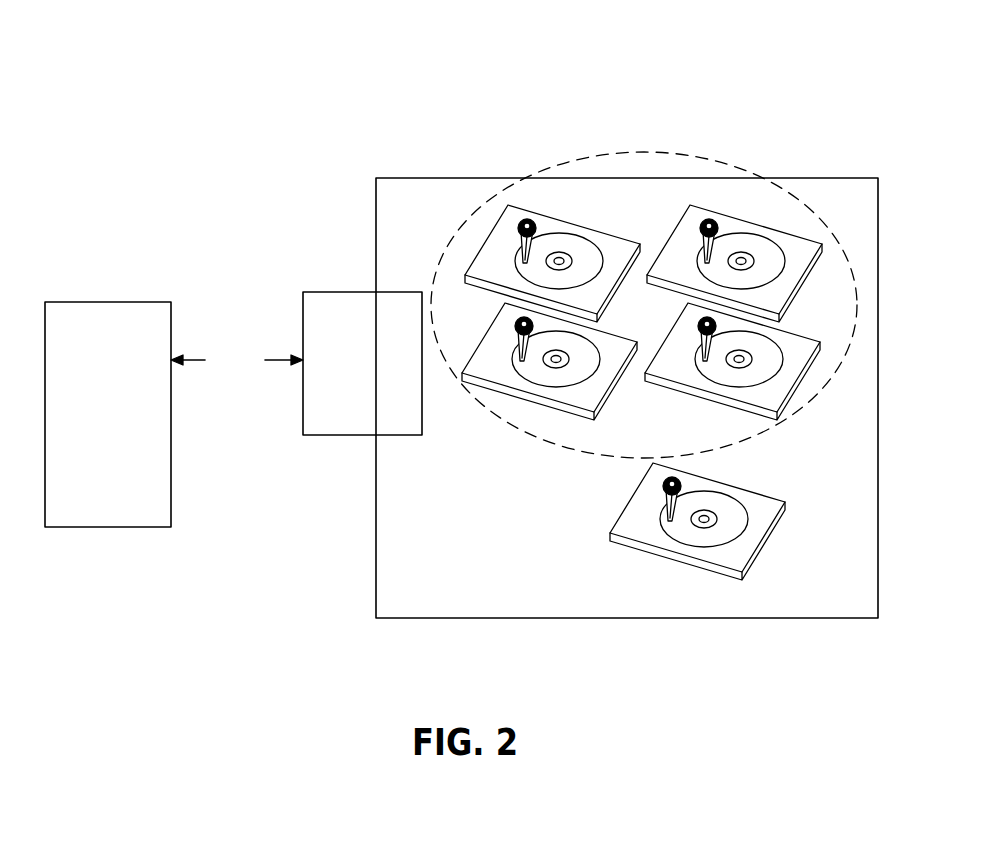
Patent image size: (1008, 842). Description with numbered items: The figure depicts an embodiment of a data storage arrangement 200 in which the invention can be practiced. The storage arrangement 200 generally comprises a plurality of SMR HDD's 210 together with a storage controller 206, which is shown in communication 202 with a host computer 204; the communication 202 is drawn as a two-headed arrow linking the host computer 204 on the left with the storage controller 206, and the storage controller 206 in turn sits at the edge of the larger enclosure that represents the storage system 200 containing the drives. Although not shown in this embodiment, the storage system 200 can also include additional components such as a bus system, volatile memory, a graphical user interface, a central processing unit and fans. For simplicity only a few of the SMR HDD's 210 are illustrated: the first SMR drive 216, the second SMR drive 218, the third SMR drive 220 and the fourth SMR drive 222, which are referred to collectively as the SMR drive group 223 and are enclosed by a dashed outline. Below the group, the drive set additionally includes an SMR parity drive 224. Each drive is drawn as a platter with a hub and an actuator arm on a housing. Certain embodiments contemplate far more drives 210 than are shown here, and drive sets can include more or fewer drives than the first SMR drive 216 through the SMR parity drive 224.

The data storage arrangement 200 is at (403, 177).
The communication 202 is at (237, 361).
The host computer 204 is at (108, 414).
The storage controller 206 is at (358, 290).
The SMR HDD's 210 is at (480, 243).
The SMR drive-1 216 is at (593, 227).
The SMR drive-2 218 is at (740, 215).
The SMR drive-3 220 is at (542, 405).
The SMR drive-4 222 is at (762, 415).
The SMR drive group 223 is at (602, 153).
The SMR parity drive-P 224 is at (668, 558).